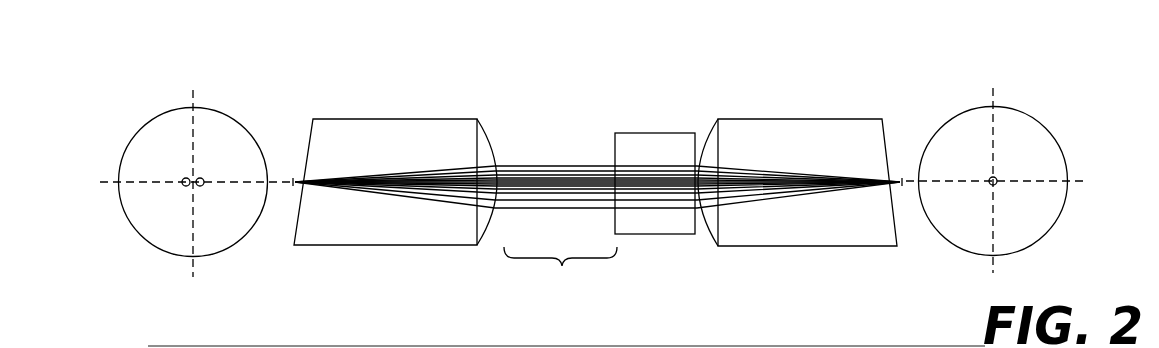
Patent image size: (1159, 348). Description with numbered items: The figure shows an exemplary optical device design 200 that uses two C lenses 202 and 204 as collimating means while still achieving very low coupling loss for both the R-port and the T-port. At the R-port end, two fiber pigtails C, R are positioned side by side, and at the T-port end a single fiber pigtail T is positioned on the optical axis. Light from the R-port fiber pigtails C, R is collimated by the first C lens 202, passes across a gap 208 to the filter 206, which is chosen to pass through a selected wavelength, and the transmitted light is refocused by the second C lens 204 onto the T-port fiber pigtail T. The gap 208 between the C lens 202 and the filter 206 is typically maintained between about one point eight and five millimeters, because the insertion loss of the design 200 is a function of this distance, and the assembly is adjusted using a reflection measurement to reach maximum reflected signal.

The design 200 is at (597, 107).
The C lens 202 is at (395, 180).
The C lens 204 is at (797, 177).
The filter 206 is at (651, 179).
The collimated beam region between lens and filter 208 is at (560, 272).
The common (input) fiber C is at (180, 168).
The reflection fiber R is at (207, 168).
The transmission fiber T is at (1002, 168).